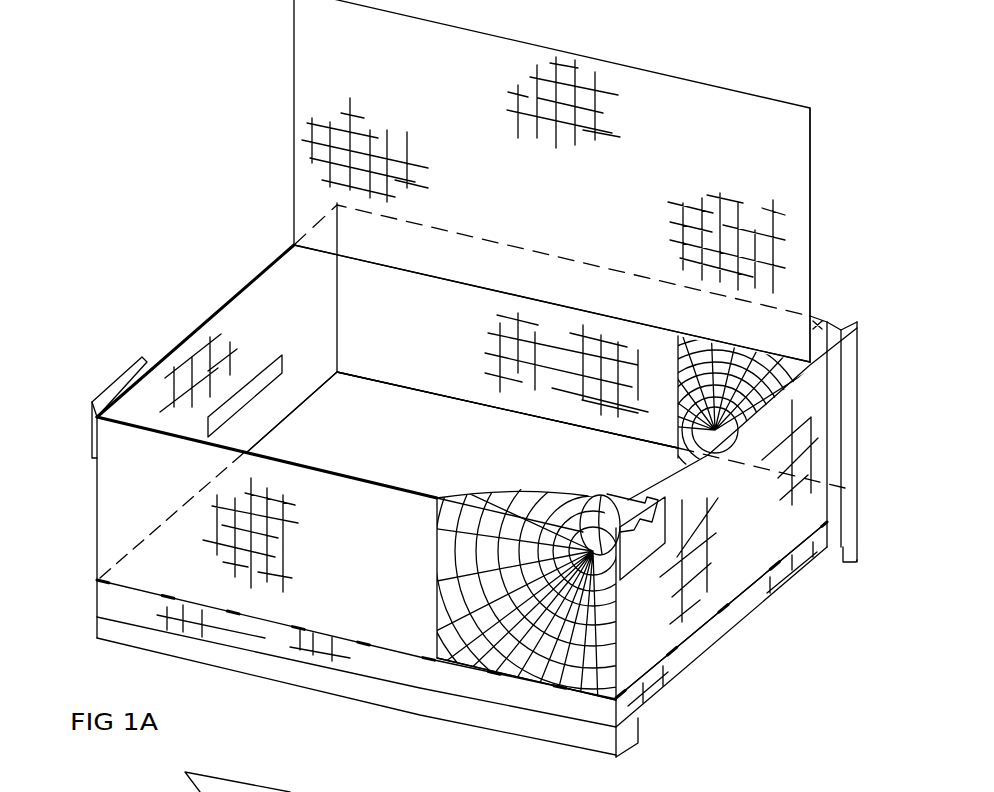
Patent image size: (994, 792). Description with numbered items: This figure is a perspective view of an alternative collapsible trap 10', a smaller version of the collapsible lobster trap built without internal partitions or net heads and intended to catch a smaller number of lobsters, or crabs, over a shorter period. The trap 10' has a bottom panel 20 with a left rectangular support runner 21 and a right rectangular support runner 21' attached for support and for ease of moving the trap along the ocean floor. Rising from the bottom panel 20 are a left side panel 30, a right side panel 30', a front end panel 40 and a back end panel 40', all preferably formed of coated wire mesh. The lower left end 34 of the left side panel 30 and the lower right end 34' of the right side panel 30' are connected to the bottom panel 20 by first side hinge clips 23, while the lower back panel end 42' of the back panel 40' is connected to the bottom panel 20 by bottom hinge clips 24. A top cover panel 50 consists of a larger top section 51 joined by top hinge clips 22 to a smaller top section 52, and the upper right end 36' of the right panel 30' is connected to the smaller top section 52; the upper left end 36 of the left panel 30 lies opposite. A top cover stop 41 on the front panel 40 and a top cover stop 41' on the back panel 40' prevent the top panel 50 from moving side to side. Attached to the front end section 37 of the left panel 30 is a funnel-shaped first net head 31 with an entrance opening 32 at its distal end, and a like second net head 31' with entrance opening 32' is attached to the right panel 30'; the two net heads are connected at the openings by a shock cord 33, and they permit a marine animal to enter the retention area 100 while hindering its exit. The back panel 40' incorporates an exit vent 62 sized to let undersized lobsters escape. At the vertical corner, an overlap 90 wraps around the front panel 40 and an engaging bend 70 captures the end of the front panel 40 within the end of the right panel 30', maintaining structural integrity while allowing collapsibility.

The collapsible trap 10' is at (197, 33).
The bottom panel 20 is at (748, 615).
The left rectangular support runner 21 is at (650, 742).
The right rectangular support runner 21' is at (870, 564).
The top hinge clips 22 is at (556, 302).
The first side hinge clips 23 is at (398, 648).
The bottom hinge clips 24 is at (674, 651).
The left side panel 30 is at (340, 527).
The right side panel 30' is at (507, 325).
The first net head 31 is at (589, 578).
The second net head 31' is at (708, 408).
The entrance opening 32 is at (636, 496).
The entrance opening 32' is at (731, 434).
The shock cord 33 is at (636, 488).
The lower left end 34 is at (332, 639).
The lower right end 34' is at (591, 424).
The upper left end 36 is at (267, 457).
The upper right end 36' is at (552, 253).
The front end section 37 is at (518, 673).
The front end panel 40 is at (736, 542).
The back end panel 40' is at (214, 351).
The top cover stop 41 is at (642, 557).
The top cover stop 41' is at (118, 378).
The lower back panel end 42' is at (173, 514).
The top cover panel 50 is at (640, 68).
The larger top section 51 is at (812, 183).
The smaller top section 52 is at (818, 324).
The exit vent 62 is at (283, 366).
The engaging bend 70 is at (846, 322).
The overlap 90 is at (830, 390).
The retention area 100 is at (450, 445).